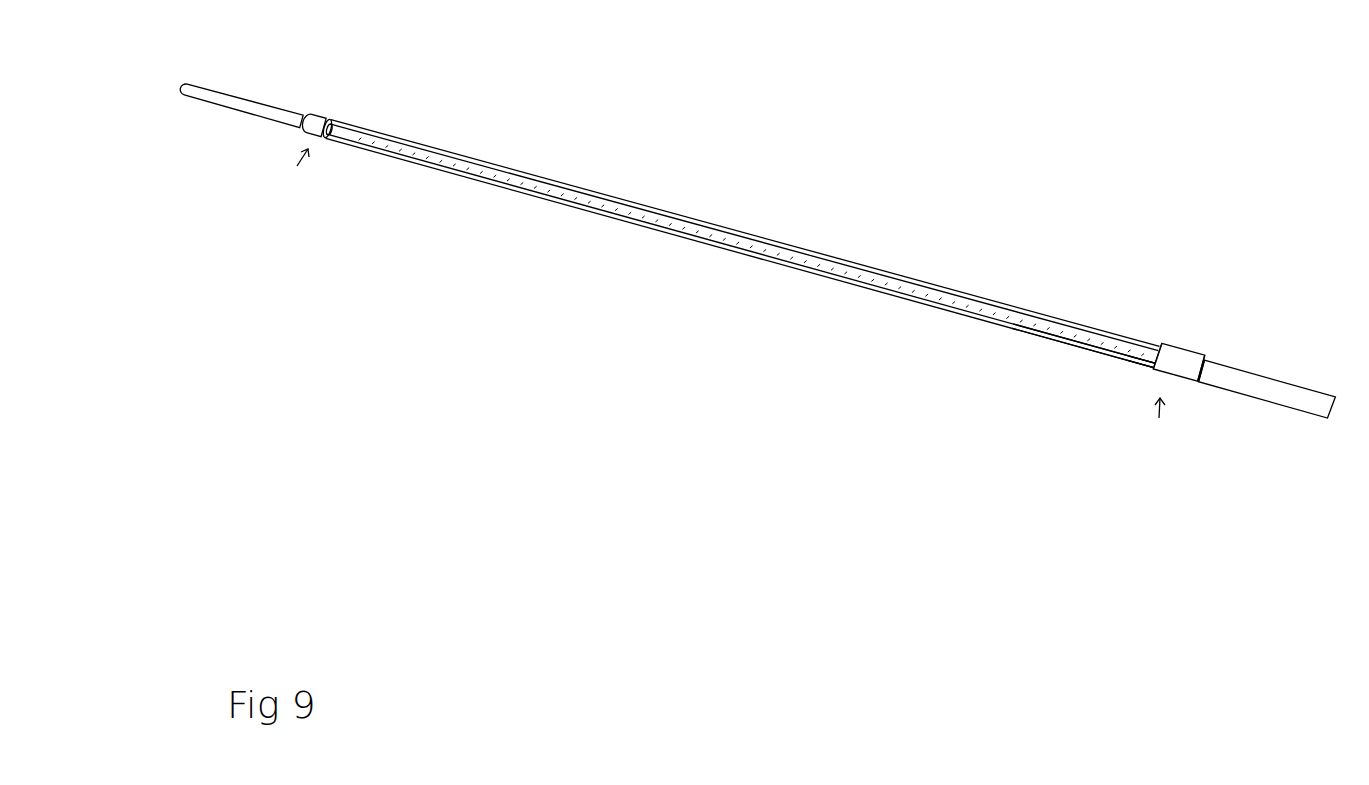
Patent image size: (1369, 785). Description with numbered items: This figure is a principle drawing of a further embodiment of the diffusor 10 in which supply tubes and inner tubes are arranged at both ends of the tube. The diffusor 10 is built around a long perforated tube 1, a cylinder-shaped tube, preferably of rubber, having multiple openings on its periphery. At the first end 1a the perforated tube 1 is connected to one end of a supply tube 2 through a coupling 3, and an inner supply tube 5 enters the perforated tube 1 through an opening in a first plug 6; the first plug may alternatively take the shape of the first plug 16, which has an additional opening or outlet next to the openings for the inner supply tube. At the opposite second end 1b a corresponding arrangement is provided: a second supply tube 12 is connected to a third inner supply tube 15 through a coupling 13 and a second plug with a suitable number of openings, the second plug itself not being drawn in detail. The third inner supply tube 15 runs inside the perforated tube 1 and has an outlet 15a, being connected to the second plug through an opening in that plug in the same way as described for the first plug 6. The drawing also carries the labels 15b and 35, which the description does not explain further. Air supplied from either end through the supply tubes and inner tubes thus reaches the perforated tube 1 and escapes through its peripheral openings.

The perforated tube 1 is at (743, 242).
The supply tube 2 is at (254, 78).
The coupling 3 is at (354, 90).
The inner supply tube 5 is at (743, 232).
The first plug 6 is at (385, 98).
The diffusor 10 is at (751, 246).
The second supply tube 12 is at (1278, 376).
The coupling 13 is at (1222, 315).
The third inner supply tube 15 is at (1063, 359).
The outlet 15a is at (1030, 353).
The tube distal end 15b is at (1089, 383).
The first plug 16 is at (1243, 350).
The collar end face 35 is at (1119, 321).
The first end 1a is at (290, 170).
The second end 1b is at (1151, 422).